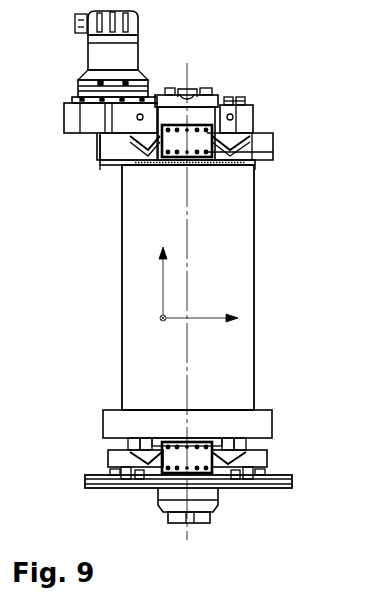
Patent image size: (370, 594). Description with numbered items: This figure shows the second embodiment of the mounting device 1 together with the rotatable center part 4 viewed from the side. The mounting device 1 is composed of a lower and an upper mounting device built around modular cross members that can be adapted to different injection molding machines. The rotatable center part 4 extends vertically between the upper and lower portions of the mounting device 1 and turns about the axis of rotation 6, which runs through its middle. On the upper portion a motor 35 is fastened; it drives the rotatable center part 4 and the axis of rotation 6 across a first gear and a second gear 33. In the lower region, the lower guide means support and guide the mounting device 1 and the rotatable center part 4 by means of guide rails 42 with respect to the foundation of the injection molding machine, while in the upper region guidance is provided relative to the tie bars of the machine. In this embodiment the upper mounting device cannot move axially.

The mounting device 1 is at (246, 60).
The motor 35 is at (103, 53).
The second gear 33 is at (93, 146).
The axis of rotation 6 is at (192, 250).
The rotatable center part 4 is at (258, 268).
The guide rails 42 is at (283, 489).